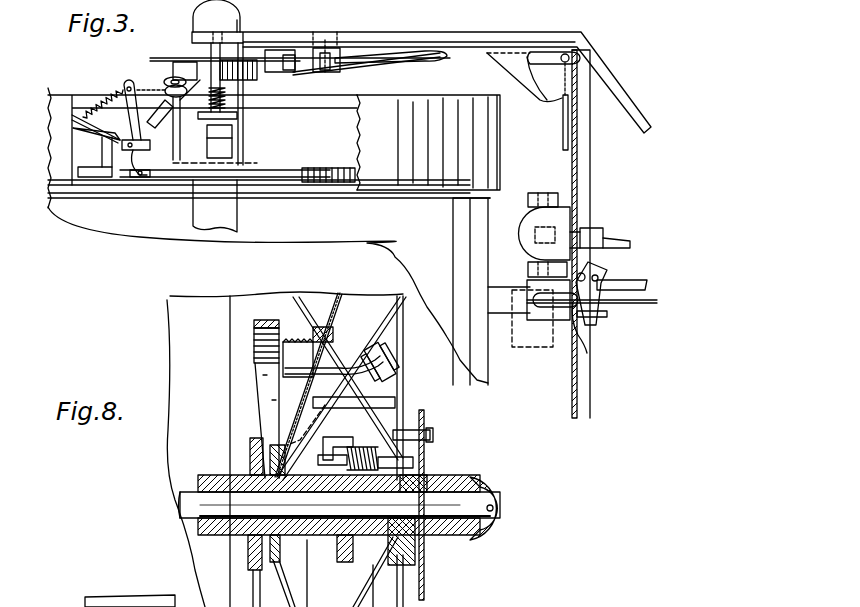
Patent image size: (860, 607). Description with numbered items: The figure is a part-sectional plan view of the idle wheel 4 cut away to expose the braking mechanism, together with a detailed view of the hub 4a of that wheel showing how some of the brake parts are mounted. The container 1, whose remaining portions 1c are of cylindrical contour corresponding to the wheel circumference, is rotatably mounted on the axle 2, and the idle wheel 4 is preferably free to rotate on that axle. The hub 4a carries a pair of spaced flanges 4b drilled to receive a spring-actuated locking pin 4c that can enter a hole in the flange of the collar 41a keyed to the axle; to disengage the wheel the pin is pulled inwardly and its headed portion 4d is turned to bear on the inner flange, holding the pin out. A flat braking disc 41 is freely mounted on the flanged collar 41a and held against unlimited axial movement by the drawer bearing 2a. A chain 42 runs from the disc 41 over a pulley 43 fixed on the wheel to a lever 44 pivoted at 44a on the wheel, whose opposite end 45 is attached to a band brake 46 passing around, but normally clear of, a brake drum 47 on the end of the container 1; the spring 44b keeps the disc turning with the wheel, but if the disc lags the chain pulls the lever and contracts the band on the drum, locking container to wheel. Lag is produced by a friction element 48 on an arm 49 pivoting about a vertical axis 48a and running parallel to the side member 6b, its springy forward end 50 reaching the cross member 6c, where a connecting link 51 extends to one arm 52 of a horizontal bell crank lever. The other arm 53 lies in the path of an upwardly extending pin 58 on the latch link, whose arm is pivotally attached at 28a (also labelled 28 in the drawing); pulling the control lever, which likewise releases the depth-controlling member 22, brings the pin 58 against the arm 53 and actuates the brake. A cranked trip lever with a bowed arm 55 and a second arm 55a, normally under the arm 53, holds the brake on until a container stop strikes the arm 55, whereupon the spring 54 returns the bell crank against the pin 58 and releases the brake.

In FIG. 3, the container 1 is at (380, 246).
In FIG. 8, the container 1 is at (180, 543).
In FIG. 3, the cylindrical portions of container 1c is at (478, 248).
In FIG. 3, the axle 2 is at (238, 133).
In FIG. 8, the axle 2 is at (494, 495).
In FIG. 8, the drawer bearing 2a is at (458, 542).
In FIG. 3, the idle wheel 4 is at (365, 140).
In FIG. 8, the idle wheel 4 is at (401, 356).
In FIG. 8, the hub of idle wheel 4a is at (297, 537).
In FIG. 8, the spaced flanges 4b is at (385, 541).
In FIG. 8, the locking pin 4c is at (412, 462).
In FIG. 8, the headed portion of locking pin 4d is at (342, 437).
In FIG. 3, the side member 6b is at (375, 35).
In FIG. 3, the cross member 6c is at (590, 168).
In FIG. 3, the depth-controlling member 22 is at (560, 223).
In FIG. 3, the connecting rod 28 is at (527, 258).
In FIG. 3, the pivotal attachment 28a is at (532, 322).
In FIG. 3, the braking disc 41 is at (152, 62).
In FIG. 8, the braking disc 41 is at (423, 412).
In FIG. 8, the flanged collar 41a is at (423, 467).
In FIG. 3, the chain 42 is at (155, 83).
In FIG. 8, the chain 42 is at (392, 392).
In FIG. 3, the pulley 43 is at (176, 58).
In FIG. 8, the pulley 43 is at (393, 384).
In FIG. 3, the lever 44 is at (130, 87).
In FIG. 3, the lever pivot 44a is at (120, 182).
In FIG. 3, the spring 44b is at (112, 98).
In FIG. 3, the opposite end of lever 45 is at (158, 182).
In FIG. 3, the band brake 46 is at (272, 186).
In FIG. 8, the band brake 46 is at (267, 321).
In FIG. 3, the brake drum 47 is at (306, 170).
In FIG. 8, the brake drum 47 is at (254, 326).
In FIG. 3, the friction element 48 is at (270, 68).
In FIG. 3, the vertical pivot axis 48a is at (324, 66).
In FIG. 3, the arm 49 is at (373, 62).
In FIG. 3, the forward end of arm 50 is at (548, 54).
In FIG. 3, the connecting link 51 is at (570, 143).
In FIG. 3, the bell crank arm 52 is at (597, 267).
In FIG. 3, the other bell crank arm 53 is at (600, 310).
In FIG. 3, the spring 54 is at (403, 50).
In FIG. 3, the upwardly extending arm of trip lever 55 is at (547, 320).
In FIG. 3, the other arm of trip lever 55a is at (603, 318).
In FIG. 3, the pin 58 is at (580, 337).